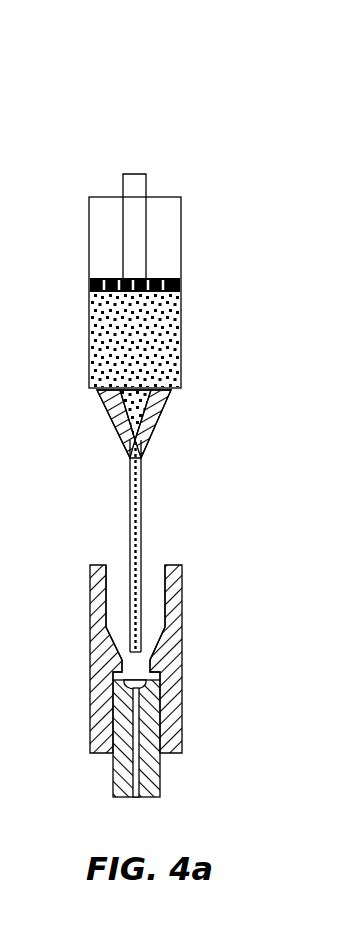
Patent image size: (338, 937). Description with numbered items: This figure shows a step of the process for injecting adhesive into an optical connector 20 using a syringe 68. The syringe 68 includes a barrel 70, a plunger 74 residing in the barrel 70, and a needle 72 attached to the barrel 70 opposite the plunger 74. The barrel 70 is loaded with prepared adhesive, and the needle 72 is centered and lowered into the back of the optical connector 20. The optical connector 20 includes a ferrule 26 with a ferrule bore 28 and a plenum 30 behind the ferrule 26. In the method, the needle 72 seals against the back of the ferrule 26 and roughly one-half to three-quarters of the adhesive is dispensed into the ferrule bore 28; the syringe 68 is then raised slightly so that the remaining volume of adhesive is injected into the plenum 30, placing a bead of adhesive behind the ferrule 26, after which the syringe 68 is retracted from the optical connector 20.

The syringe 68 is at (200, 283).
The plunger 74 is at (146, 205).
The barrel 70 is at (181, 318).
The needle 72 is at (141, 528).
The optical connector 20 is at (192, 672).
The plenum 30 is at (172, 575).
The ferrule 26 is at (160, 778).
The ferrule bore 28 is at (138, 797).